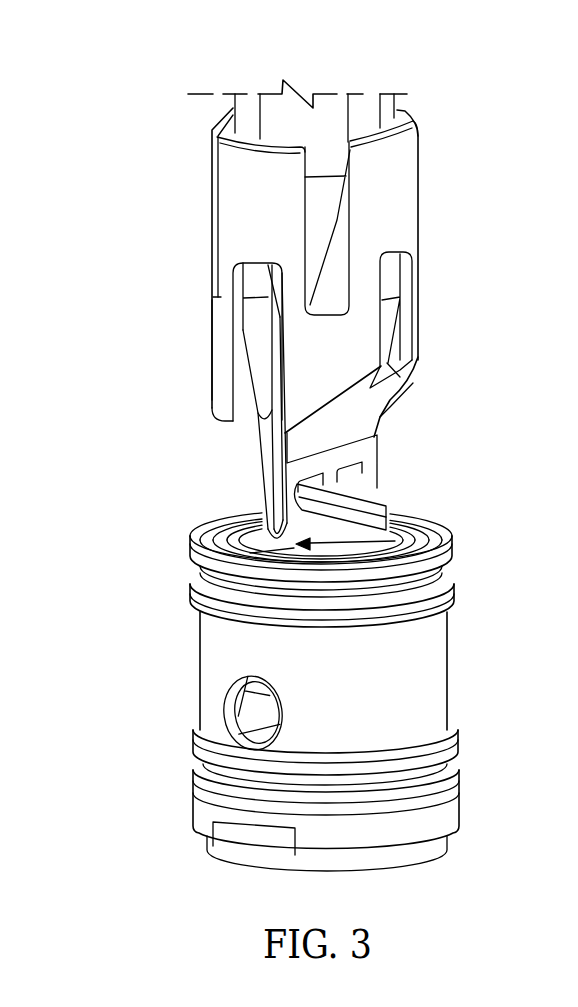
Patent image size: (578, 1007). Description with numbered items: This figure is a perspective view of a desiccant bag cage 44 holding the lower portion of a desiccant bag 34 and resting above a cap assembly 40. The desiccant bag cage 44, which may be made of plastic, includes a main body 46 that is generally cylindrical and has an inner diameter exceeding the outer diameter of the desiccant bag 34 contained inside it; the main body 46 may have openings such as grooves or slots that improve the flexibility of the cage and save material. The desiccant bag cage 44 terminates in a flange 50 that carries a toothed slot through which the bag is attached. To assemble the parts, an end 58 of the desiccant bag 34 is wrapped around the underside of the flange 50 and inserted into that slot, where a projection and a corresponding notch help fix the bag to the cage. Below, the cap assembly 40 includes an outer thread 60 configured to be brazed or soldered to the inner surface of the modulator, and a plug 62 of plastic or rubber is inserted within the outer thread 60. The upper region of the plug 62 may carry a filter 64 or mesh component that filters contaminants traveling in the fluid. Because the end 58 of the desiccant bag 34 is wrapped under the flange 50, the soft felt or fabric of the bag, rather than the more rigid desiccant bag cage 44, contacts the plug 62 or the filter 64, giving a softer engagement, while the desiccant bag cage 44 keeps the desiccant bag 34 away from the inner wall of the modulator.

The desiccant bag 34 is at (373, 110).
The cap assembly 40 is at (298, 702).
The desiccant bag cage 44 is at (407, 175).
The main body 46 is at (223, 203).
The flange 50 is at (372, 452).
The end of the desiccant bag 58 is at (368, 502).
The outer thread 60 is at (428, 663).
The plug 62 is at (380, 542).
The filter 64 is at (263, 503).